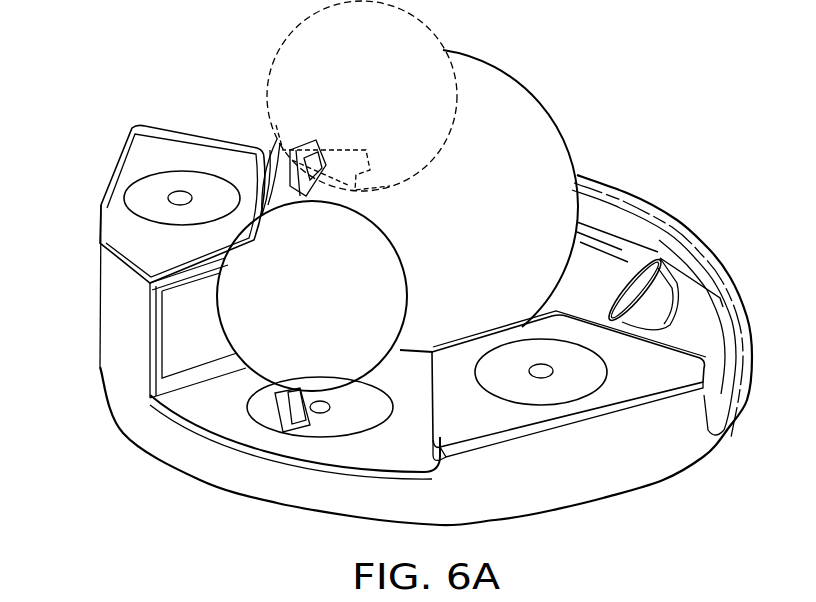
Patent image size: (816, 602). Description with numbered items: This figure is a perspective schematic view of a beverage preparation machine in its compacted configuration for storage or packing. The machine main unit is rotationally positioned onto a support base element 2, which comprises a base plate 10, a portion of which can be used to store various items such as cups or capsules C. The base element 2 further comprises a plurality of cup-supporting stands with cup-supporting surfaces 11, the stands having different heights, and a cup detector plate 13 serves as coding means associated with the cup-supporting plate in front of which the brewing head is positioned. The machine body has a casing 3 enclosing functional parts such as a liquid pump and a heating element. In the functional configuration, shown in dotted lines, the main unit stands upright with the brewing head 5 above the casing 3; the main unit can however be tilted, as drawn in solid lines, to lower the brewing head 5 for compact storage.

The support base element 2 is at (88, 286).
The casing 3 is at (507, 211).
The brewing head 5 is at (319, 313).
The base plate 10 is at (592, 311).
The cup-supporting surfaces 11 is at (163, 163).
The cup detector plate 13 is at (133, 198).
The cups of capsules C is at (632, 288).